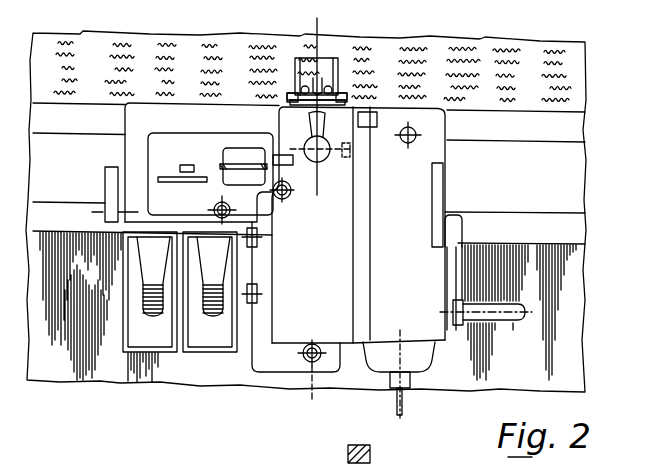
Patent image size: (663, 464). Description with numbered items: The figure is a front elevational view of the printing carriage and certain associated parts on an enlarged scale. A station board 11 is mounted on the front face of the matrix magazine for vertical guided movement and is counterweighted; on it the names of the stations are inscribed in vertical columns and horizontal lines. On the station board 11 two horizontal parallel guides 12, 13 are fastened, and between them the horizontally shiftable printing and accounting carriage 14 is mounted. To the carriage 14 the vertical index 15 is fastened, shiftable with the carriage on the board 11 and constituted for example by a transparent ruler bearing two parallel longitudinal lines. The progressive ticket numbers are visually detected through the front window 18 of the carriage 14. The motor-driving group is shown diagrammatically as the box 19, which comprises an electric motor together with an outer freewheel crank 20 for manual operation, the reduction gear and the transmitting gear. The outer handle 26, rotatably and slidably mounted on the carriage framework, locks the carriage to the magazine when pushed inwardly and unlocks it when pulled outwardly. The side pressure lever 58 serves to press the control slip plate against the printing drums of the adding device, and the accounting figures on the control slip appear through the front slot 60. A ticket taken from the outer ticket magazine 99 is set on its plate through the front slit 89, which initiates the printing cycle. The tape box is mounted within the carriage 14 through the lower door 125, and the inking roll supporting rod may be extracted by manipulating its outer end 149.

The station board 11 is at (573, 80).
The horizontal parallel guide 12 is at (573, 132).
The horizontal parallel guide 13 is at (573, 227).
The printing and accounting carriage 14 is at (292, 320).
The vertical index 15 is at (330, 67).
The front window 18 is at (183, 165).
The motor-driving group 19 is at (413, 308).
The outer freewheel crank 20 is at (507, 320).
The outer handle 26 is at (318, 157).
The side pressure lever 58 is at (110, 183).
The front slot 60 is at (175, 181).
The front slit 89 is at (247, 165).
The outer ticket magazine 99 is at (160, 332).
The lower door 125 is at (322, 370).
The outer end of supporting rod 149 is at (284, 200).